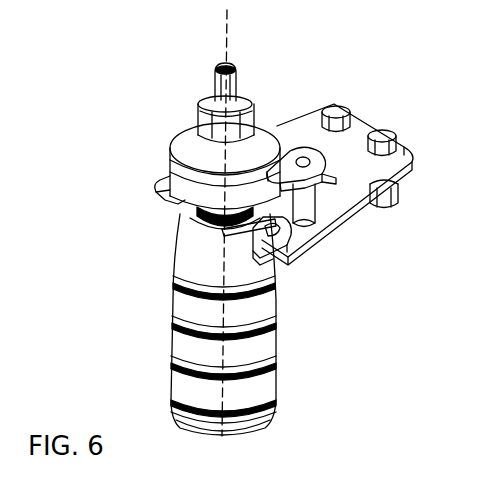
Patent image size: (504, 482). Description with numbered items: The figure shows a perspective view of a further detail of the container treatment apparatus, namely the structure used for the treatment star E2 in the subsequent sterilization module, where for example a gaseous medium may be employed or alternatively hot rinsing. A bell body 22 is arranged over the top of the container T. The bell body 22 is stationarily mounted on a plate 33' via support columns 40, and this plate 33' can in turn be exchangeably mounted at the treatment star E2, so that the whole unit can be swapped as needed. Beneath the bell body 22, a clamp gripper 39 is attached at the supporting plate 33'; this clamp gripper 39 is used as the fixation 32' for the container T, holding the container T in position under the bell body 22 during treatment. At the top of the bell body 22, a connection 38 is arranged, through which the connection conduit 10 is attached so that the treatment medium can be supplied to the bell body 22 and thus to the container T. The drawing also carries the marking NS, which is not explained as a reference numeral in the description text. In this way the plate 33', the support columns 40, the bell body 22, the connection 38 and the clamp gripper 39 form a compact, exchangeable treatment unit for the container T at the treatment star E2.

The connection conduit 10 is at (229, 38).
The connection 38 is at (237, 90).
The bell body 22 is at (180, 133).
The fixation 32' is at (188, 229).
The container T is at (168, 341).
The plate 33' is at (337, 184).
The treatment star E2 is at (412, 183).
The support columns 40 is at (322, 228).
The clamp gripper 39 is at (293, 238).
The clamp assembly NS is at (330, 296).